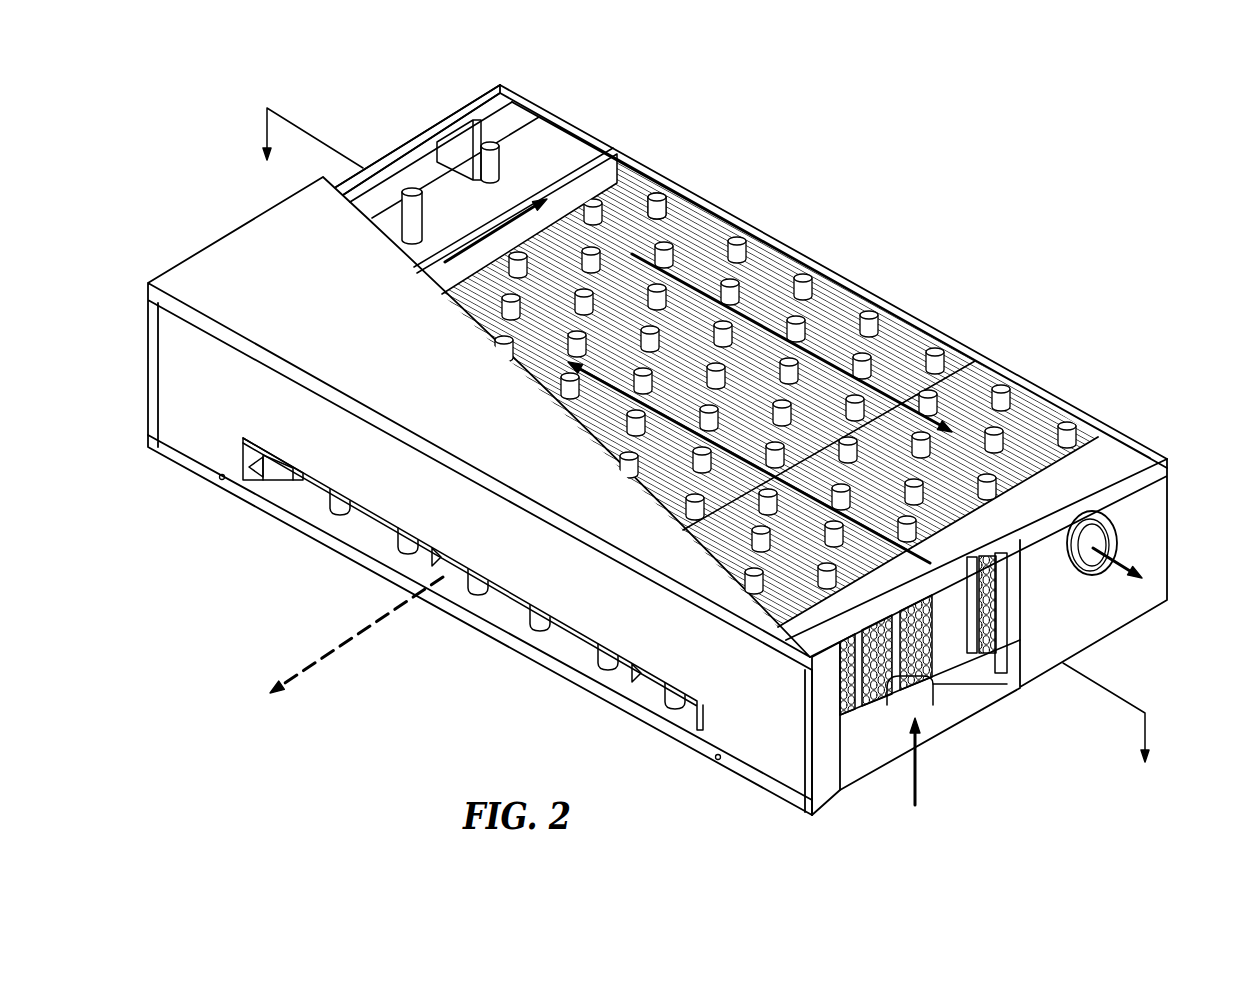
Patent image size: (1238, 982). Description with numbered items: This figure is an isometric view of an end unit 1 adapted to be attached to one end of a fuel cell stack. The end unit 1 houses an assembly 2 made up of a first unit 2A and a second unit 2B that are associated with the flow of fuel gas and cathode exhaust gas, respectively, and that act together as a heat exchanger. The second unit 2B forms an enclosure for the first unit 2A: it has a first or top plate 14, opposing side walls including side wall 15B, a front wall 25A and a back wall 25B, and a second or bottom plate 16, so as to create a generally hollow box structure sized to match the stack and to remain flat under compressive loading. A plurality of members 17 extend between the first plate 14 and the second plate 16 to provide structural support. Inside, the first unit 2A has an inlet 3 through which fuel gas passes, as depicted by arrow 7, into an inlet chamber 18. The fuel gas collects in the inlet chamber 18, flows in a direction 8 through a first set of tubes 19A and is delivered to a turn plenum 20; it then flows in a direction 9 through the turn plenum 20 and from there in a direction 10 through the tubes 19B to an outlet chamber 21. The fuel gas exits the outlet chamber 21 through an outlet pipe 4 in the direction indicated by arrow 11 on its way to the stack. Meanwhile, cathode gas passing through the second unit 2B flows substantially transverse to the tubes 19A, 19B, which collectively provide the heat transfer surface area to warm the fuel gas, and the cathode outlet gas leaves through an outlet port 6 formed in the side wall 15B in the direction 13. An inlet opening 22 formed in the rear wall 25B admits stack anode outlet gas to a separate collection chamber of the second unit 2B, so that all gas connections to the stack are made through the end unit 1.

The end unit 1 is at (255, 203).
The assembly 2 is at (592, 158).
The first unit 2A is at (953, 407).
The second unit 2B is at (513, 600).
The inlet 3 is at (957, 725).
The outlet pipe 4 is at (1087, 573).
The outlet port 6 is at (553, 645).
The arrow 7 is at (920, 770).
The direction 8 is at (622, 394).
The direction 9 is at (490, 232).
The direction 10 is at (813, 353).
The arrow 11 is at (1095, 548).
The direction 13 is at (343, 647).
The first plate 14 is at (218, 270).
The side wall 15B is at (182, 385).
The second plate 16 is at (242, 487).
The members 17 is at (657, 197).
The inlet chamber 18 is at (883, 707).
The first set of tubes 19A is at (730, 547).
The tubes 19B is at (760, 283).
The turn plenum 20 is at (567, 183).
The outlet chamber 21 is at (985, 653).
The inlet opening 22 is at (463, 143).
The front wall 25A is at (823, 750).
The back wall 25B is at (383, 168).